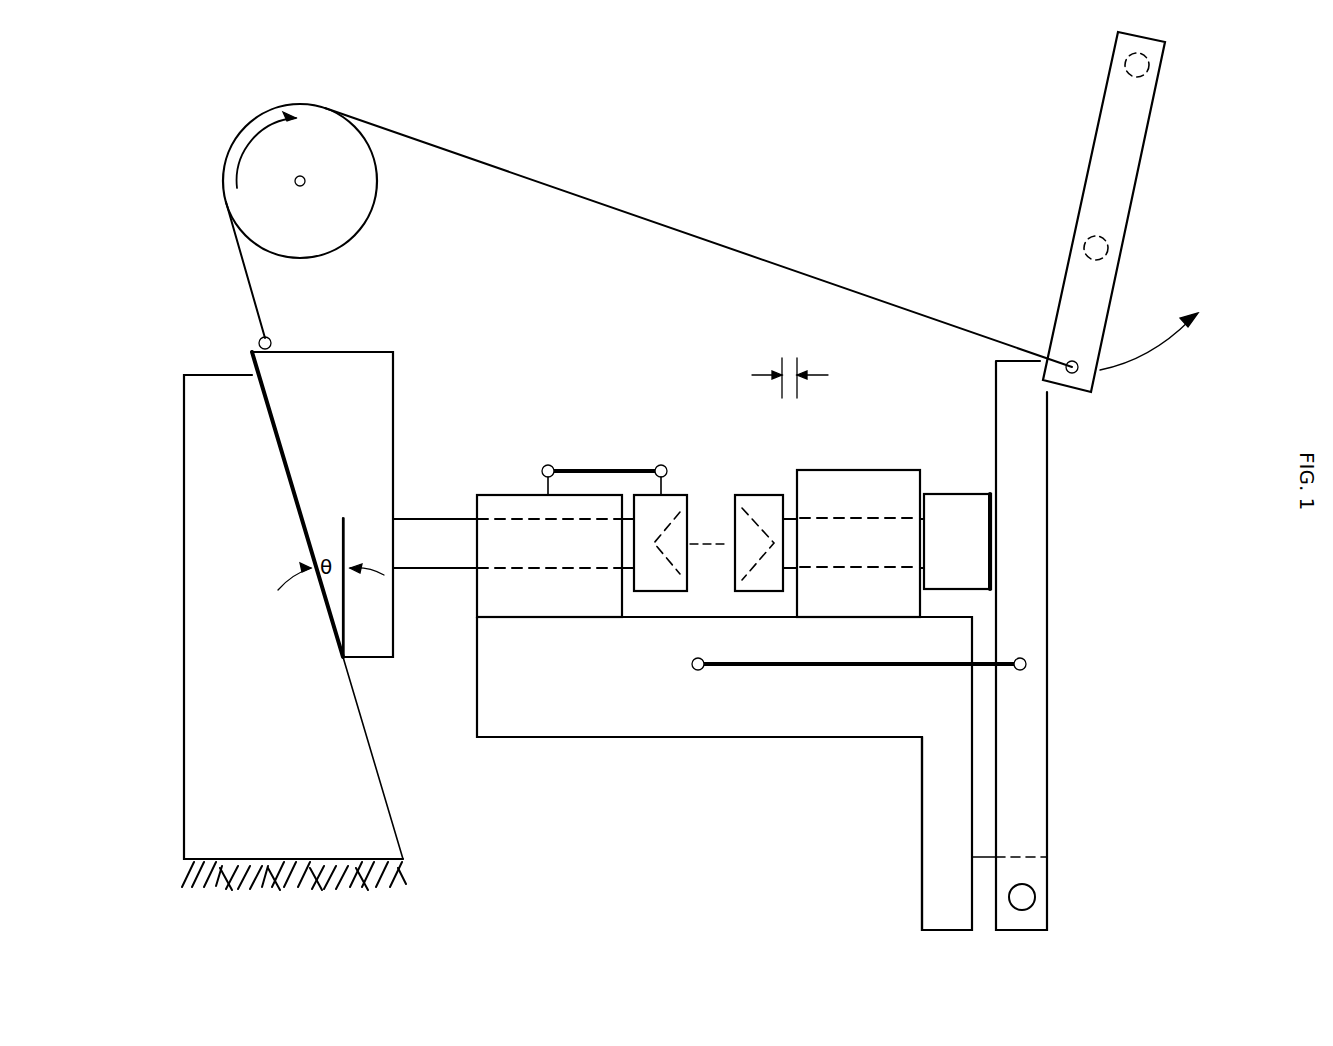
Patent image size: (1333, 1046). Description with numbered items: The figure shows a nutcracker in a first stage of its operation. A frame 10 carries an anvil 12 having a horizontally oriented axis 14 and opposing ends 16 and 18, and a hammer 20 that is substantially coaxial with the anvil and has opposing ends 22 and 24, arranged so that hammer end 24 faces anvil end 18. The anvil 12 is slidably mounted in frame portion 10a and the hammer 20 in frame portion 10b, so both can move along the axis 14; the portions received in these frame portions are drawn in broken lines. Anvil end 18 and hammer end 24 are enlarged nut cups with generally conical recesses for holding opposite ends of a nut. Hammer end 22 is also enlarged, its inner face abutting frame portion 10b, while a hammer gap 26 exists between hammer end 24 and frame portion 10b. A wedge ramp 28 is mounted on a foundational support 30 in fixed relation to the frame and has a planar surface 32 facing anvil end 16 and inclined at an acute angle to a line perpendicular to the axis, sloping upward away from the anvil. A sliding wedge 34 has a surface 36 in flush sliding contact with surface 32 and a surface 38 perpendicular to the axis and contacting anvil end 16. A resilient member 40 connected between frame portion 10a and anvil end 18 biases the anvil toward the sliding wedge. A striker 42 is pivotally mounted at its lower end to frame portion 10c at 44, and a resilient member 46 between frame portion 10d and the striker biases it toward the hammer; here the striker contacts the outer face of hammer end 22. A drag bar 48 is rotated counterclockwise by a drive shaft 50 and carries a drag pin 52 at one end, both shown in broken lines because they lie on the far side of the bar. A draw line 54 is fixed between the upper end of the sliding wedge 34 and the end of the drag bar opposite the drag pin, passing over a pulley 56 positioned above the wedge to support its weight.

The frame 10 is at (741, 740).
The frame portion 10a is at (506, 494).
The frame portion 10b is at (862, 470).
The frame portion 10c is at (922, 884).
The frame portion 10d is at (624, 737).
The anvil 12 is at (447, 518).
The axis 14 is at (705, 548).
The anvil end 16 is at (404, 518).
The anvil end 18 is at (677, 490).
The hammer 20 is at (790, 515).
The hammer end 22 is at (956, 494).
The hammer end 24 is at (748, 492).
The hammer gap 26 is at (791, 352).
The wedge ramp 28 is at (184, 680).
The foundational support 30 is at (408, 866).
The planar surface 32 is at (355, 680).
The sliding wedge 34 is at (324, 351).
The planar surface 36 is at (246, 358).
The planar surface 38 is at (398, 370).
The resilient member 40 is at (600, 470).
The striker 42 is at (1047, 530).
The pivot 44 is at (1035, 897).
The resilient member 46 is at (862, 668).
The drag bar 48 is at (1128, 250).
The drive shaft 50 is at (1084, 248).
The drag pin 52 is at (1125, 65).
The draw line 54 is at (664, 226).
The pulley 56 is at (378, 185).